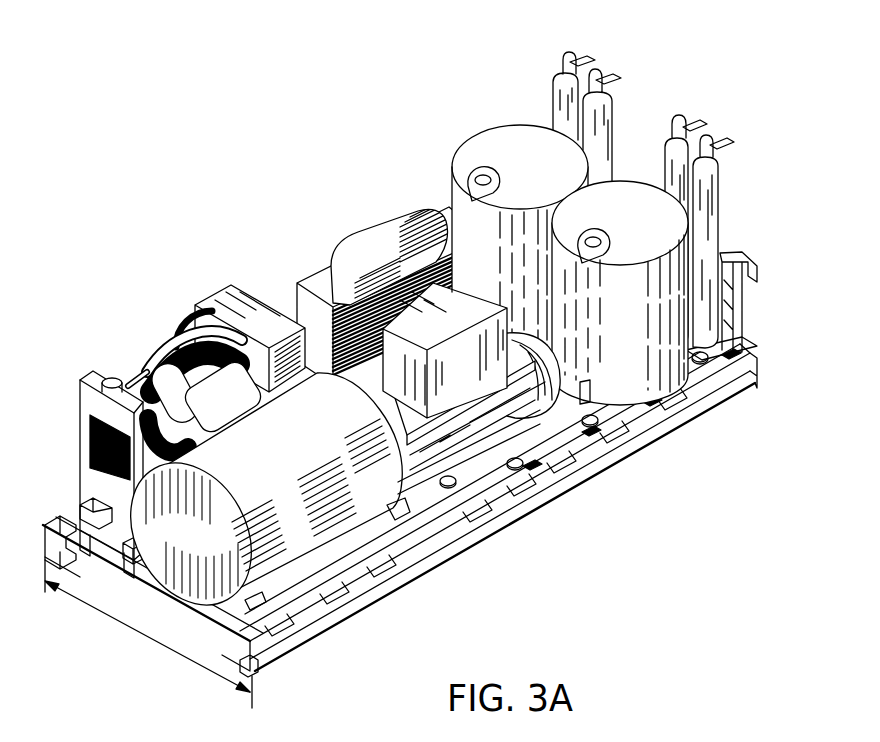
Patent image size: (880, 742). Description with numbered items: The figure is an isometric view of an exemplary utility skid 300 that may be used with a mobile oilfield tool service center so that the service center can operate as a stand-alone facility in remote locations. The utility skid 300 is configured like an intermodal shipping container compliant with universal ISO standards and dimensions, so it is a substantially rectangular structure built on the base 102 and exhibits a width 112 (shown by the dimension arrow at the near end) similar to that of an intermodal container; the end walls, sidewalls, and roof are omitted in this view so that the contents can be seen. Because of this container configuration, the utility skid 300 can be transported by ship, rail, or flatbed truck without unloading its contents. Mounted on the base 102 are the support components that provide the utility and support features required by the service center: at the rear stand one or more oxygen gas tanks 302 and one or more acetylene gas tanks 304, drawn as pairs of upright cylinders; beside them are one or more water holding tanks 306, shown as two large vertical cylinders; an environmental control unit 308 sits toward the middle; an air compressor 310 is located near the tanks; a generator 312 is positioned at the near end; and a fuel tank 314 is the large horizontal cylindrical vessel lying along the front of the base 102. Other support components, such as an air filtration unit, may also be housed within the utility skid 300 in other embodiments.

The utility skid 300 is at (423, 365).
The base 102 is at (460, 553).
The width 112 is at (133, 630).
The oxygen gas tanks 302 is at (600, 72).
The acetylene gas tanks 304 is at (718, 142).
The water holding tanks 306 is at (700, 222).
The environmental control unit 308 is at (323, 282).
The air compressor 310 is at (505, 416).
The generator 312 is at (152, 340).
The fuel tank 314 is at (316, 506).